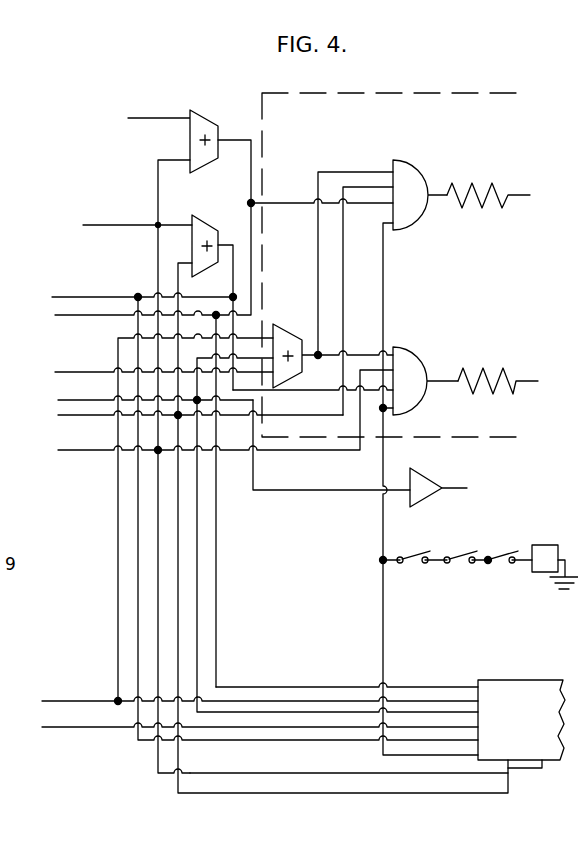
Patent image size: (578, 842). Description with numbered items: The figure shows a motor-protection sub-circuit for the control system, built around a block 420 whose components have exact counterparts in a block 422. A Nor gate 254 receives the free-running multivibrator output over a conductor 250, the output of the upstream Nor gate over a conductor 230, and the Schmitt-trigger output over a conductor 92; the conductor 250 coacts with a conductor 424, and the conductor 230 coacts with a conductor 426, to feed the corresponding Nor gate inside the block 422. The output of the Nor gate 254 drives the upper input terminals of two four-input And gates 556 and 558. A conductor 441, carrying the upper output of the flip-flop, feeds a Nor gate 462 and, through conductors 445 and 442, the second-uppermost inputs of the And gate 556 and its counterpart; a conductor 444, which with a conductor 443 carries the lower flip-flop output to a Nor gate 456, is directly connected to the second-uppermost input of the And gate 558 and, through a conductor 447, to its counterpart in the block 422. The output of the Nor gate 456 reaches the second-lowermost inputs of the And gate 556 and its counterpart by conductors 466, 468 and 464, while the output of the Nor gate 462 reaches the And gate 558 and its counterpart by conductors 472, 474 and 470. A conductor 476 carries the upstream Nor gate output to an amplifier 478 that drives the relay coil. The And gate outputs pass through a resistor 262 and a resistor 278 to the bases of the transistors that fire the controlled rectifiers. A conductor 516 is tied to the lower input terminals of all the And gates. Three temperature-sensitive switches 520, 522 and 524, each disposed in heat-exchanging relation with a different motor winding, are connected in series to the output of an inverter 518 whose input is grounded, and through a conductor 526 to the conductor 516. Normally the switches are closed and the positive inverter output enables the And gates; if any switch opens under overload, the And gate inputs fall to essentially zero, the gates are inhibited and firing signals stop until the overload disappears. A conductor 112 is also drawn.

The block 420 is at (450, 93).
The Nor gate 456 is at (200, 110).
The conductor 464 is at (236, 140).
The conductor 466 is at (286, 203).
The And gate 556 is at (418, 165).
The resistor 262 is at (478, 185).
The Nor gate 462 is at (193, 215).
The conductor 470 is at (232, 243).
The conductor 443 is at (157, 247).
The conductor 444 is at (170, 265).
The conductor 441 is at (90, 417).
The conductor 445 is at (287, 417).
The conductor 442 is at (185, 793).
The conductor 447 is at (158, 752).
The conductor 474 is at (288, 773).
The conductor 516 is at (385, 285).
The And gate 558 is at (418, 352).
The resistor 278 is at (470, 369).
The conductor 92 is at (60, 372).
The conductor 230 is at (197, 358).
The conductor 426 is at (198, 570).
The conductor 476 is at (300, 491).
The Nor gate 254 is at (306, 362).
The conductor 472 is at (283, 392).
The amplifier 478 is at (435, 472).
The conductor 468 is at (219, 612).
The conductor 424 is at (295, 688).
The conductor 250 is at (115, 663).
The line 112 is at (50, 729).
The conductor 526 is at (393, 563).
The temperature-sensitive switch 520 is at (410, 557).
The temperature-sensitive switch 522 is at (460, 557).
The temperature-sensitive switch 524 is at (490, 564).
The inverter 518 is at (545, 545).
The block 422 is at (527, 680).